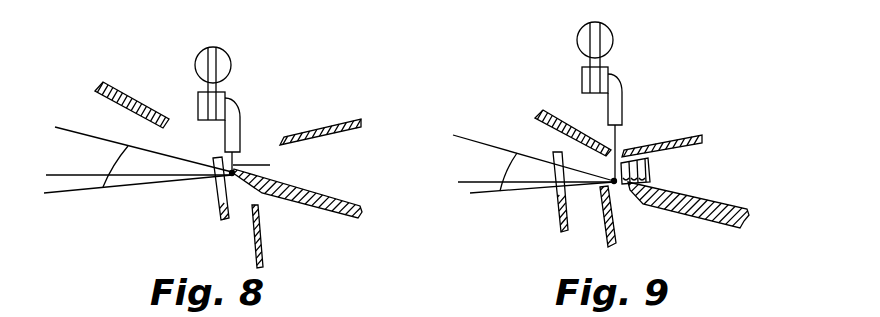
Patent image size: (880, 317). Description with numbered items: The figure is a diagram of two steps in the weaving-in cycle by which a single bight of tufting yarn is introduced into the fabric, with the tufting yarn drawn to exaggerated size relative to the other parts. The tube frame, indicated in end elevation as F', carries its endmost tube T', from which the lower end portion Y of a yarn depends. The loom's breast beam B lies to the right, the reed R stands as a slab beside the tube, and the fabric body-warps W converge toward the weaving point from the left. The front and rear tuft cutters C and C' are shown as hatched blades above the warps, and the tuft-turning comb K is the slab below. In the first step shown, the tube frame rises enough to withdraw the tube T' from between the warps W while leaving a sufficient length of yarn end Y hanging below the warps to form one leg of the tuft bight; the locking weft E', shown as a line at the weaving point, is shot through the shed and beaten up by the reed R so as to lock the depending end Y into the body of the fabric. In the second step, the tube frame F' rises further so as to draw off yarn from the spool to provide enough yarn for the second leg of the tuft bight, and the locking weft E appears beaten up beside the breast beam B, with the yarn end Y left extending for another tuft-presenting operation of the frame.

In FIG. 8, the needle bar F' is at (227, 83).
In FIG. 9, the needle bar F' is at (611, 57).
In FIG. 8, the needle holder T' is at (244, 132).
In FIG. 9, the needle holder T' is at (629, 124).
In FIG. 8, the feed line E' is at (262, 163).
In FIG. 8, the rear tuft cutter C' is at (132, 94).
In FIG. 9, the rear tuft cutter C' is at (573, 114).
In FIG. 8, the front tuft cutter C is at (320, 122).
In FIG. 9, the front tuft cutter C is at (662, 129).
In FIG. 8, the fabric body-warps W is at (138, 160).
In FIG. 9, the fabric body-warps W is at (533, 164).
In FIG. 8, the breast beam B is at (325, 194).
In FIG. 9, the breast beam B is at (706, 203).
In FIG. 8, the reed R is at (198, 188).
In FIG. 9, the reed R is at (558, 216).
In FIG. 8, the yarn end Y is at (233, 182).
In FIG. 9, the yarn end Y is at (617, 138).
In FIG. 8, the tuft-turning comb K is at (262, 256).
In FIG. 9, the tuft-turning comb K is at (606, 243).
In FIG. 9, the locking weft E is at (632, 192).